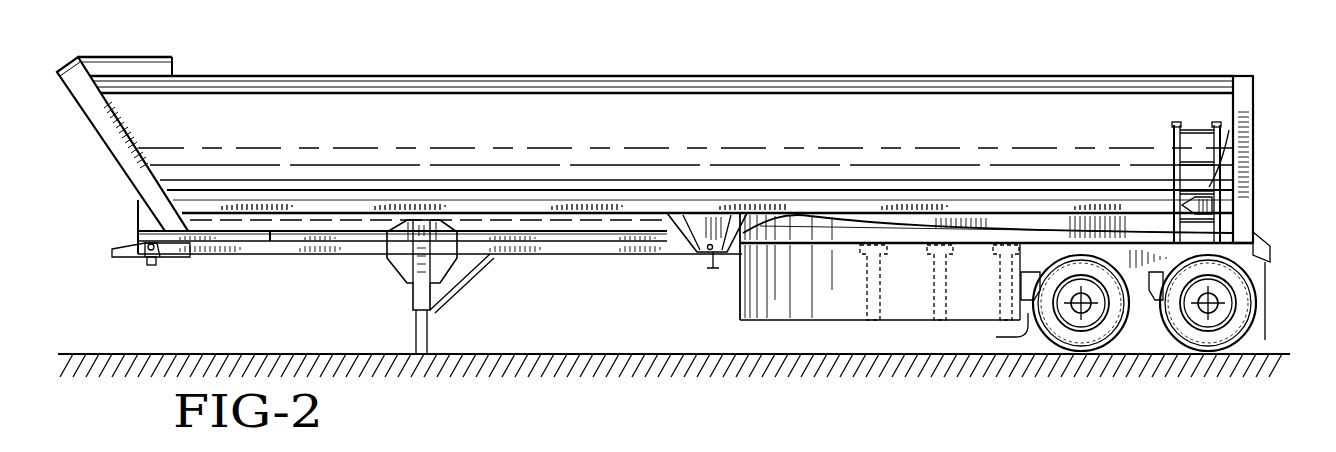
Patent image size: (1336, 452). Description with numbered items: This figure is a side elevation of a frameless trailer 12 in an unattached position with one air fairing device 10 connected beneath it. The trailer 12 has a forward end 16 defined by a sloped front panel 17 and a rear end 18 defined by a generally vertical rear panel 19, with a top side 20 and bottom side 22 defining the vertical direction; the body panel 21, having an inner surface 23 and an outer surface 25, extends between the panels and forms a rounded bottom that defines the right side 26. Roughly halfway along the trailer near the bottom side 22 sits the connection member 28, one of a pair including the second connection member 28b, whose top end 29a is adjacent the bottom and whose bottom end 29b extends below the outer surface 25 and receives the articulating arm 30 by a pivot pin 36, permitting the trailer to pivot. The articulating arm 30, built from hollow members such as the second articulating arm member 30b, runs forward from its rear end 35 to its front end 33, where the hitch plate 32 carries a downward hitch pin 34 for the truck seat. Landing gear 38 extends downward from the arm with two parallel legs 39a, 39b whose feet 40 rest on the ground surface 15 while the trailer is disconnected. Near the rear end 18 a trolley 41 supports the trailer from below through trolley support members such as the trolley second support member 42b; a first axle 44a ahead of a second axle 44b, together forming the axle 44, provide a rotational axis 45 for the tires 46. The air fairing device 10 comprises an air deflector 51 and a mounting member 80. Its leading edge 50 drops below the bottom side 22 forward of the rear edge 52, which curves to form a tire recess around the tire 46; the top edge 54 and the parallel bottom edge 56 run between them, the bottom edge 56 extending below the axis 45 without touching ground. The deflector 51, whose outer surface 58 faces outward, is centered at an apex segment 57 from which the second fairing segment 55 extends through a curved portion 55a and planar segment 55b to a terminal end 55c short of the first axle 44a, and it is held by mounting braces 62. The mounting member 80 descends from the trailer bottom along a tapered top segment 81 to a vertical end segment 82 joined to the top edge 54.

The air fairing device 10 is at (677, 227).
The frameless trailer 12 is at (677, 135).
The ground surface 15 is at (148, 353).
The forward end 16 is at (116, 151).
The front panel 17 is at (110, 147).
The rear end 18 is at (1268, 137).
The rear panel 19 is at (1260, 146).
The top side 20 is at (677, 135).
The body panel 21 is at (241, 125).
The bottom side 22 is at (663, 273).
The inner surface 23 is at (503, 127).
The outer surface 25 is at (590, 141).
The right side 26 is at (790, 127).
The connection member 28 is at (701, 188).
The second connection member 28b is at (697, 209).
The top end of connection member 29a is at (713, 212).
The bottom end of connection member 29b is at (706, 256).
The articulating arm 30 is at (262, 258).
The second articulating arm member 30b is at (283, 252).
The hitch plate 32 is at (125, 258).
The front end of articulating arm 33 is at (165, 251).
The hitch pin 34 is at (152, 266).
The rear end of articulating arm 35 is at (703, 252).
The pivot pin 36 is at (713, 274).
The landing gear 38 is at (410, 297).
The first leg 39a is at (425, 325).
The second leg 39b is at (418, 337).
The foot 40 is at (410, 353).
The trolley 41 is at (1149, 187).
The trolley second support member 42b is at (1116, 252).
The axle 44 is at (1144, 349).
The first axle 44a is at (1081, 349).
The second axle 44b is at (1198, 312).
The rotational axis 45 is at (1071, 312).
The tire 46 is at (1114, 325).
The leading edge 50 is at (935, 267).
The air deflector 51 is at (915, 316).
The rear edge 52 is at (996, 338).
The top edge 54 is at (920, 231).
The second fairing segment 55 is at (900, 337).
The curved portion of second fairing segment 55a is at (897, 297).
The planar segment of second fairing wall 55b is at (1029, 253).
The terminal end of second fairing segment 55c is at (1072, 240).
The bottom edge 56 is at (762, 322).
The apex segment 57 is at (738, 293).
The outer surface of deflector 58 is at (793, 296).
The mounting brace 62 is at (862, 294).
The mounting member 80 is at (1000, 212).
The tapered top segment 81 is at (960, 221).
The vertical end segment 82 is at (863, 227).